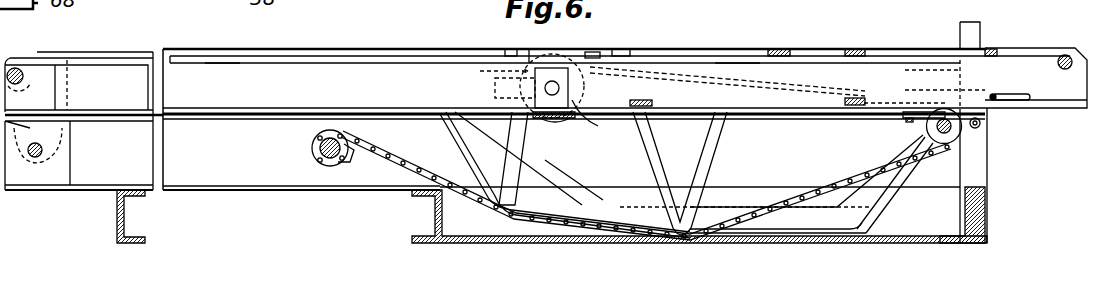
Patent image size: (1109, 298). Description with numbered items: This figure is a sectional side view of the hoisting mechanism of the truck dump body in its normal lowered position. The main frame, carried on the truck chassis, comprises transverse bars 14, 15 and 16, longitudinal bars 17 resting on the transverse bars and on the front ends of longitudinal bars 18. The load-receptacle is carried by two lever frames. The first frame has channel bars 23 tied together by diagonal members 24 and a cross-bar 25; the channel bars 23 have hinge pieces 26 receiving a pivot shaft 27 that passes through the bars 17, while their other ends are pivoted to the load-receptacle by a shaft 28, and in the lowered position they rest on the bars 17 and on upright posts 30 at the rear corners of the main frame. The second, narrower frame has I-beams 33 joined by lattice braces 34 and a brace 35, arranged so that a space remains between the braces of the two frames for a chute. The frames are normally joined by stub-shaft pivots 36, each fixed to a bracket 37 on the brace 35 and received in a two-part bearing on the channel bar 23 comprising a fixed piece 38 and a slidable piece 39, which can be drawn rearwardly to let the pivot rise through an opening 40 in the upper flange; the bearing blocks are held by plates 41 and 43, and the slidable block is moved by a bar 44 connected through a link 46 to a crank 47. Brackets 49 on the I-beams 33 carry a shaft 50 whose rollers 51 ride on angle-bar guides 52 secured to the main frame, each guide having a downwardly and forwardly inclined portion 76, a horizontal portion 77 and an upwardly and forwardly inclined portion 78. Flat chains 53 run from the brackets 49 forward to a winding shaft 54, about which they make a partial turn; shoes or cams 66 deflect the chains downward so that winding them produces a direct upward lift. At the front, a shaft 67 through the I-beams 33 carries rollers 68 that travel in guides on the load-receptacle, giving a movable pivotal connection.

The transverse bar 14 is at (123, 219).
The transverse bar 15 is at (433, 222).
The transverse bar 16 is at (990, 210).
The longitudinal bar 17 is at (221, 196).
The longitudinal bar 18 is at (755, 187).
The channel bar 23 is at (362, 51).
The diagonal member 24 is at (856, 50).
The cross-bar 25 is at (782, 50).
The hinge piece 26 is at (60, 138).
The shaft 27 is at (42, 152).
The shaft 28 is at (1066, 55).
The upright post 30 is at (988, 150).
The I-beam 33 is at (204, 63).
The lattice brace 34 is at (651, 103).
The brace 35 is at (550, 119).
The pivot 36 is at (557, 88).
The bracket 37 is at (596, 118).
The fixed piece 38 is at (495, 97).
The slidable piece 39 is at (500, 76).
The opening 40 is at (560, 52).
The plate 41 is at (527, 56).
The plate 43 is at (618, 55).
The bar 44 is at (762, 86).
The link 46 is at (926, 91).
The crank 47 is at (1006, 95).
The bracket 49 is at (903, 119).
The shaft 50 is at (946, 108).
The roller 51 is at (926, 134).
The guide 52 is at (713, 208).
The chain 53 is at (808, 192).
The winding shaft 54 is at (312, 157).
The shoe or cam 66 is at (612, 218).
The shaft 67 is at (24, 78).
The roller 68 is at (18, 62).
The downwardly and forwardly inclined portion 76 is at (892, 197).
The horizontal portion 77 is at (790, 234).
The upwardly and forwardly inclined portion 78 is at (535, 200).